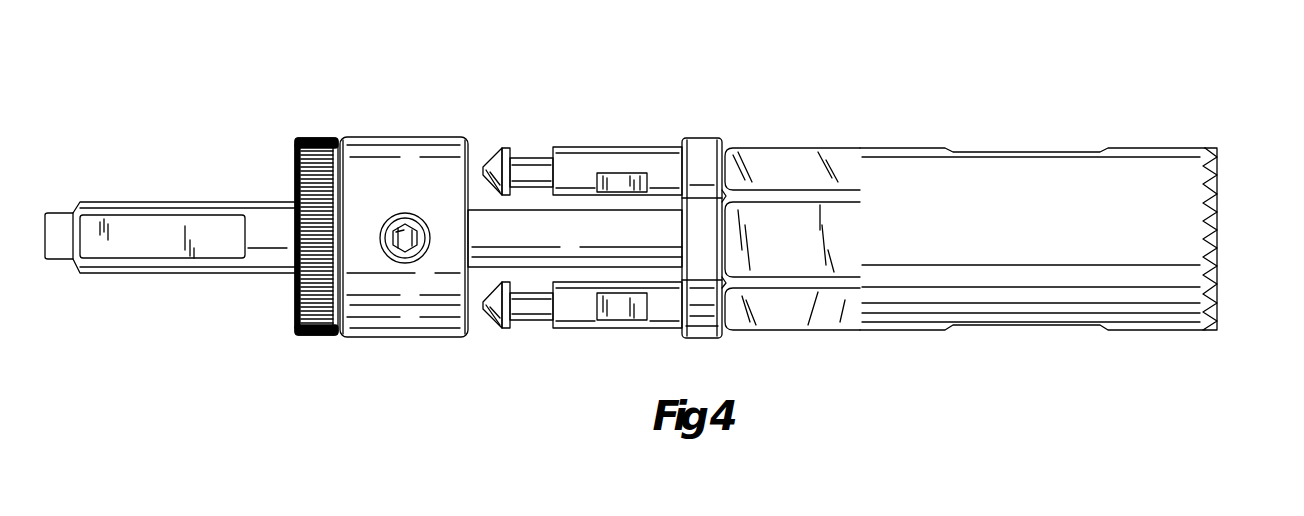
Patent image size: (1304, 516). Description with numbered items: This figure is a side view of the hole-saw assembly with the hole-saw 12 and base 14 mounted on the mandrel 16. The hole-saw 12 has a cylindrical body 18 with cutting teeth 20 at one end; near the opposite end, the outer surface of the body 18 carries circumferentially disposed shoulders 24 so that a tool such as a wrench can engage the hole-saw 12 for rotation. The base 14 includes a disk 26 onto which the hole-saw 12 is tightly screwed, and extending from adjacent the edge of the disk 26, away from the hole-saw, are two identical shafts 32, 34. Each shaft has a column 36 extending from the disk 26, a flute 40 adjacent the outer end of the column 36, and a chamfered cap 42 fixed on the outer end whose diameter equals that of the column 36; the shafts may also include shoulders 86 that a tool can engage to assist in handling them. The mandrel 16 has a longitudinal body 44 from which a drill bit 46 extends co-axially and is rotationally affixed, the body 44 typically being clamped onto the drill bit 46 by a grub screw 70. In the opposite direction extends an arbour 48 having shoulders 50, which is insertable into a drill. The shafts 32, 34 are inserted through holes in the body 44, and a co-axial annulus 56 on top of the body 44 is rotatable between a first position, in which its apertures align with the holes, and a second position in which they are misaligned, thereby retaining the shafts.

The hole-saw 12 is at (1061, 113).
The base 14 is at (694, 98).
The mandrel 16 is at (329, 96).
The cylindrical body 18 is at (995, 210).
The cutting teeth 20 is at (1230, 178).
The shoulders 24 is at (797, 220).
The disk 26 is at (713, 138).
The shaft 32 is at (583, 148).
The shaft 34 is at (593, 328).
The column 36 is at (613, 173).
The flute 40 is at (525, 152).
The chamfered cap 42 is at (495, 162).
The longitudinal body 44 is at (405, 175).
The drill bit 46 is at (552, 245).
The arbour 48 is at (163, 208).
The shoulders 50 is at (163, 242).
The annulus 56 is at (305, 138).
The grub screw 70 is at (418, 260).
The shoulders 86 is at (641, 180).